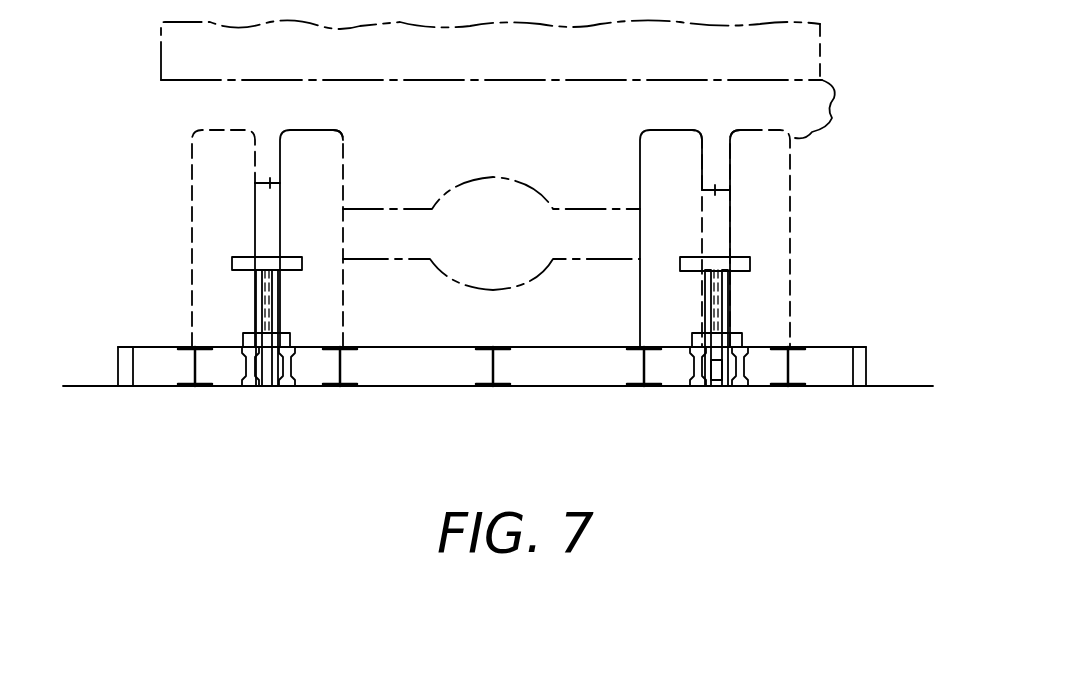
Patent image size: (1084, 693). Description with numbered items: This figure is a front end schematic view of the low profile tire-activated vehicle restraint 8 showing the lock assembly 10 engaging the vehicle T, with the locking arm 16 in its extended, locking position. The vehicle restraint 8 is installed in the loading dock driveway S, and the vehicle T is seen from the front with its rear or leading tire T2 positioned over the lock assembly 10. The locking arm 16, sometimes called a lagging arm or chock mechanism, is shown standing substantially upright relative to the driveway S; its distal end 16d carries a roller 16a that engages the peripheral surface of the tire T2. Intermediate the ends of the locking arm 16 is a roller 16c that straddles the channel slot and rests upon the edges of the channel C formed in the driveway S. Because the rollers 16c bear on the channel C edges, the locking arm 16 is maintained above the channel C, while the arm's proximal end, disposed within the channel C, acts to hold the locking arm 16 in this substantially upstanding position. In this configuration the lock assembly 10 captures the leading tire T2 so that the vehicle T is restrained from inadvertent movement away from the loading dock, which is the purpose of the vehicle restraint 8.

The vehicle restraint 8 is at (277, 410).
The lock assembly 10 is at (501, 304).
The locking arm 16 is at (232, 262).
The roller 16a is at (748, 265).
The roller 16c is at (855, 330).
The distal end 16d is at (728, 377).
The channel C is at (247, 388).
The driveway S is at (458, 347).
The vehicle T is at (568, 82).
The rear tire T2 is at (780, 168).